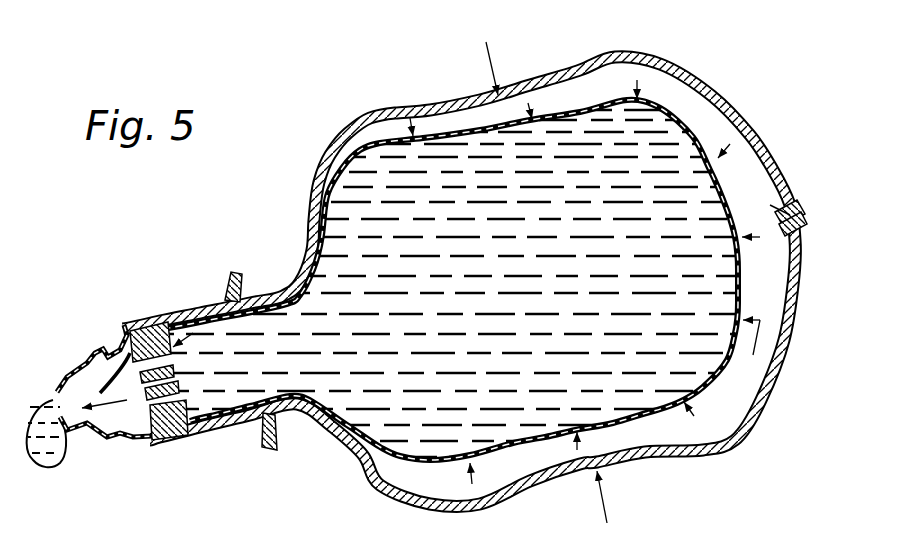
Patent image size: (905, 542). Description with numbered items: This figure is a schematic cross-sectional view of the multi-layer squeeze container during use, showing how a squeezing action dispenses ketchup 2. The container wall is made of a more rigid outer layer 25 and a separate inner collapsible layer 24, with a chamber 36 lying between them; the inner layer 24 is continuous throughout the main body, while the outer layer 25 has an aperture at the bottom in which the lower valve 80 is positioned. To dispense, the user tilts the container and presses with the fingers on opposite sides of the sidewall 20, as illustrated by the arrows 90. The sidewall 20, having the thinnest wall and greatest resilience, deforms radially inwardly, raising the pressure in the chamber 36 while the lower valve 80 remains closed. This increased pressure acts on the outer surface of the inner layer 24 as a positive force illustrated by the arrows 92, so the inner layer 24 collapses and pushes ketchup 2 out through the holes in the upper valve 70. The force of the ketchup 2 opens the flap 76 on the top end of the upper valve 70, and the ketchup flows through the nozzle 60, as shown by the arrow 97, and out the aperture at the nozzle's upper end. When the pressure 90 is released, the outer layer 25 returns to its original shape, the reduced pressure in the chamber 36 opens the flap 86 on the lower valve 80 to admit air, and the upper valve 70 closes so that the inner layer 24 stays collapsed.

The ketchup 2 is at (353, 213).
The sidewall portion 20 is at (587, 63).
The inner collapsible layer 24 is at (480, 130).
The outer layer 25 is at (433, 108).
The chamber 36 is at (713, 133).
The nozzle 60 is at (63, 373).
The upper valve 70 is at (200, 308).
The flap 76 is at (110, 368).
The lower valve 80 is at (792, 199).
The flap 86 is at (772, 215).
The arrows 90 is at (493, 77).
The arrows 92 is at (694, 416).
The arrow 97 is at (110, 438).